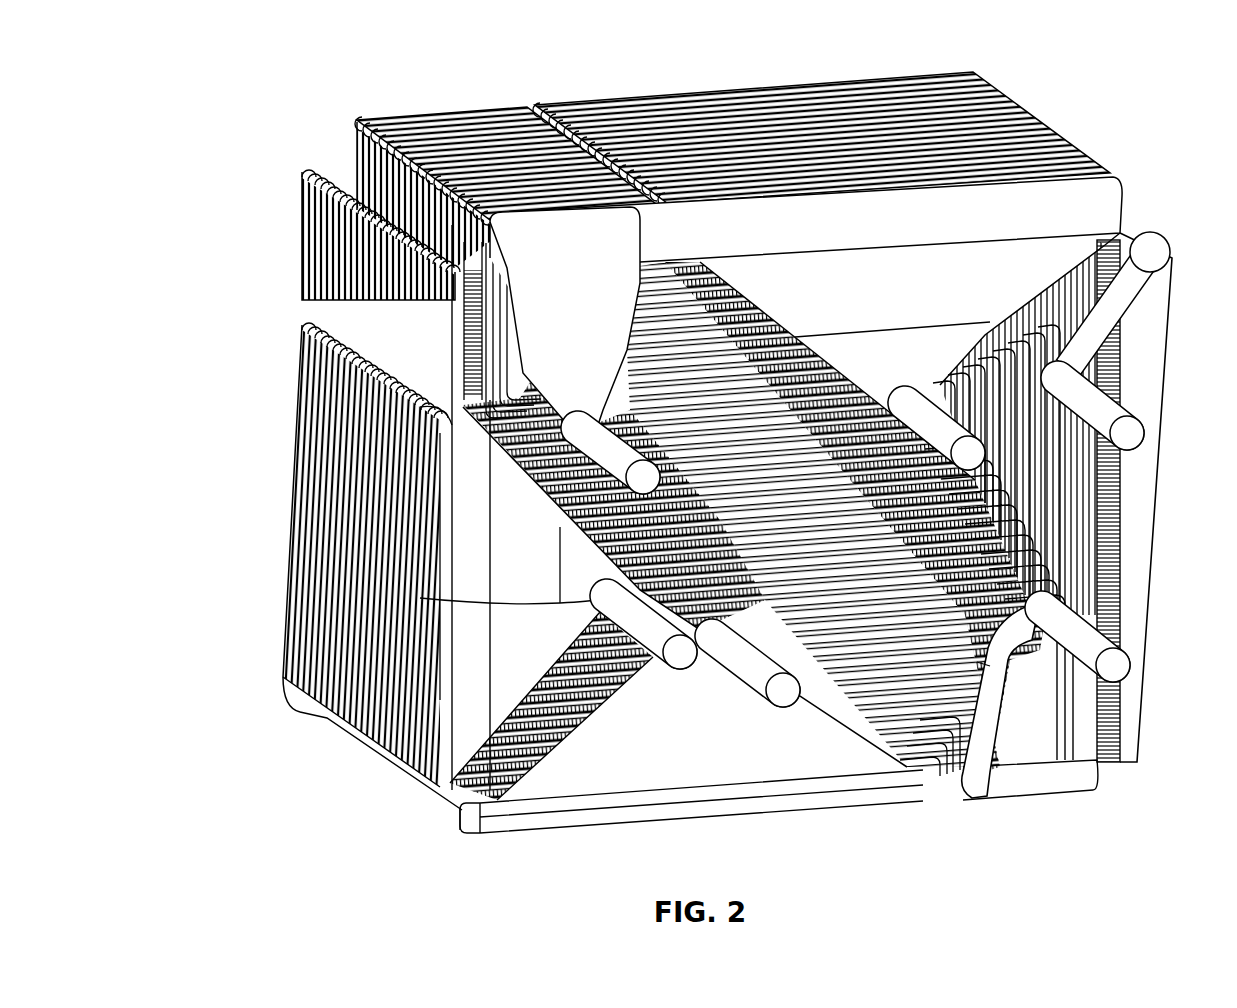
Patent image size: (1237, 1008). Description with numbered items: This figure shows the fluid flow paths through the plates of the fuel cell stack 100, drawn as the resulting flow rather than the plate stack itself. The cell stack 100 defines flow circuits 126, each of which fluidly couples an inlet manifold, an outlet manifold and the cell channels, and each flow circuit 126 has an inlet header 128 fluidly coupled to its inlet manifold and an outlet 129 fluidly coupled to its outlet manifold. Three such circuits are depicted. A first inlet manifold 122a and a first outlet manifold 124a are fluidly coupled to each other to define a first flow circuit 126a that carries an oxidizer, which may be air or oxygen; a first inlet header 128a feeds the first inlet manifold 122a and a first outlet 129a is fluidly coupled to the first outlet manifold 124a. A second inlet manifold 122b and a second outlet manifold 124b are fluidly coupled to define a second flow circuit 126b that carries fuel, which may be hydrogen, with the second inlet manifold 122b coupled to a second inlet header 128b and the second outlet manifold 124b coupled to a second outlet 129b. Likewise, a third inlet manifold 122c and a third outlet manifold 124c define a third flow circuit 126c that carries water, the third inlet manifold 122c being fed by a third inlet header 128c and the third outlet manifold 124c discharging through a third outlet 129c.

The cell stack 100 is at (306, 64).
The first inlet manifold 122a is at (482, 838).
The second inlet manifold 122b is at (300, 570).
The third inlet manifold 122c is at (950, 783).
The first outlet manifold 124a is at (762, 82).
The second outlet manifold 124b is at (1132, 568).
The third outlet manifold 124c is at (490, 115).
The flow circuits 126 is at (641, 408).
The first flow circuit 126a is at (821, 106).
The second flow circuit 126b is at (317, 490).
The third flow circuit 126c is at (398, 102).
The inlet header 128 is at (758, 580).
The first inlet header 128a is at (783, 690).
The second inlet header 128b is at (683, 663).
The third inlet header 128c is at (1120, 660).
The outlet 129 is at (861, 328).
The first outlet 129a is at (940, 390).
The second outlet 129b is at (1128, 432).
The third outlet 129c is at (640, 473).